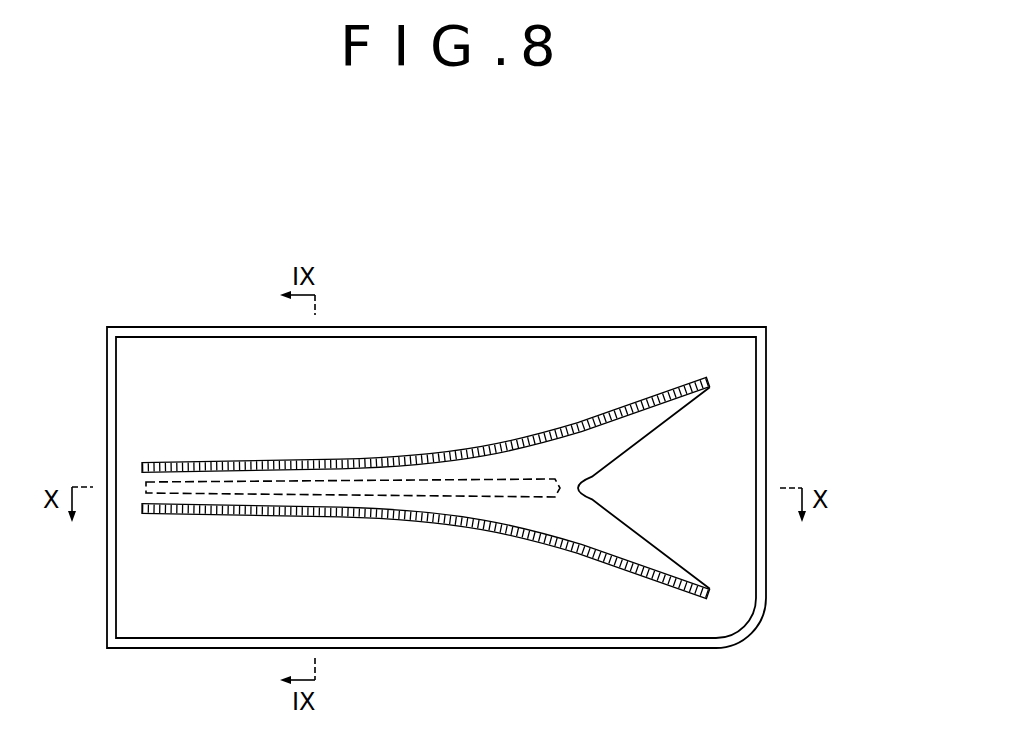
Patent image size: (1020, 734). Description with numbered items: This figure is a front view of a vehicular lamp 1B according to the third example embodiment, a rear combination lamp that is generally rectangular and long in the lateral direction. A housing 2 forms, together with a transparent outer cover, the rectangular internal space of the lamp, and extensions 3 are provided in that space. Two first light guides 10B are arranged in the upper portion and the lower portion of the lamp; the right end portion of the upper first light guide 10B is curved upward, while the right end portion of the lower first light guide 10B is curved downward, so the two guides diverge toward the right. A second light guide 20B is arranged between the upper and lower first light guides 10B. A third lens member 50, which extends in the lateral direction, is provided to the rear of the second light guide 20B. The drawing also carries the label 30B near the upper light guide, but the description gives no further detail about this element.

The vehicular lamp 1B is at (660, 248).
The housing 2 is at (733, 333).
The extension 3 is at (660, 357).
The first light guide 10B is at (573, 552).
The second light guide 20B is at (537, 463).
The upper electrode 30B is at (603, 415).
The third lens member 50 is at (383, 477).